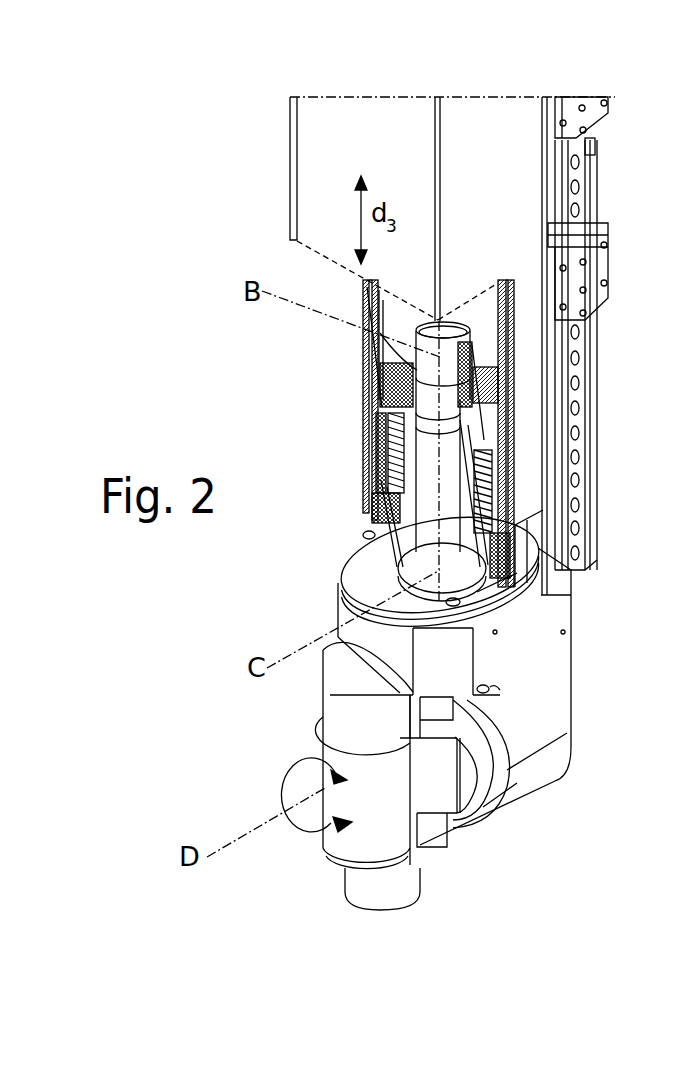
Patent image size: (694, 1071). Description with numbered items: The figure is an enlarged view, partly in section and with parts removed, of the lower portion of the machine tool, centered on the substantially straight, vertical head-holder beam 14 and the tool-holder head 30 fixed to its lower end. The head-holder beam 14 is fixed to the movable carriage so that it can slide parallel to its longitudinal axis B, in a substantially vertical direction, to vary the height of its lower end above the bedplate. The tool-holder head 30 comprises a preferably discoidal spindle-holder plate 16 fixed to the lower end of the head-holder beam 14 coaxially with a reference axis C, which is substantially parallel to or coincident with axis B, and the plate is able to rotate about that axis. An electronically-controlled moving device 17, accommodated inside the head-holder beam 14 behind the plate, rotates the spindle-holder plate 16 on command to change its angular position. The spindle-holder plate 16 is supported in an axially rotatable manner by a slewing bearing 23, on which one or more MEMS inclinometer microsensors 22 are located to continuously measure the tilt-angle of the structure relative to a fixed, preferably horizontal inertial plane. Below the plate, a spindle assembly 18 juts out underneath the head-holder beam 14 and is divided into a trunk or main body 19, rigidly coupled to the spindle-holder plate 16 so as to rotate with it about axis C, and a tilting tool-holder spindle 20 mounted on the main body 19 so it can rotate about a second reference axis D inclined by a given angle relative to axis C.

The head-holder beam 14 is at (320, 118).
The spindle-holder plate 16 is at (378, 490).
The moving device 17 is at (380, 420).
The spindle assembly 18 is at (525, 788).
The main body 19 is at (543, 706).
The tool-holder spindle 20 is at (356, 848).
The inclinometer microsensor 22 is at (400, 553).
The slewing bearing 23 is at (340, 580).
The tool-holder head 30 is at (326, 615).